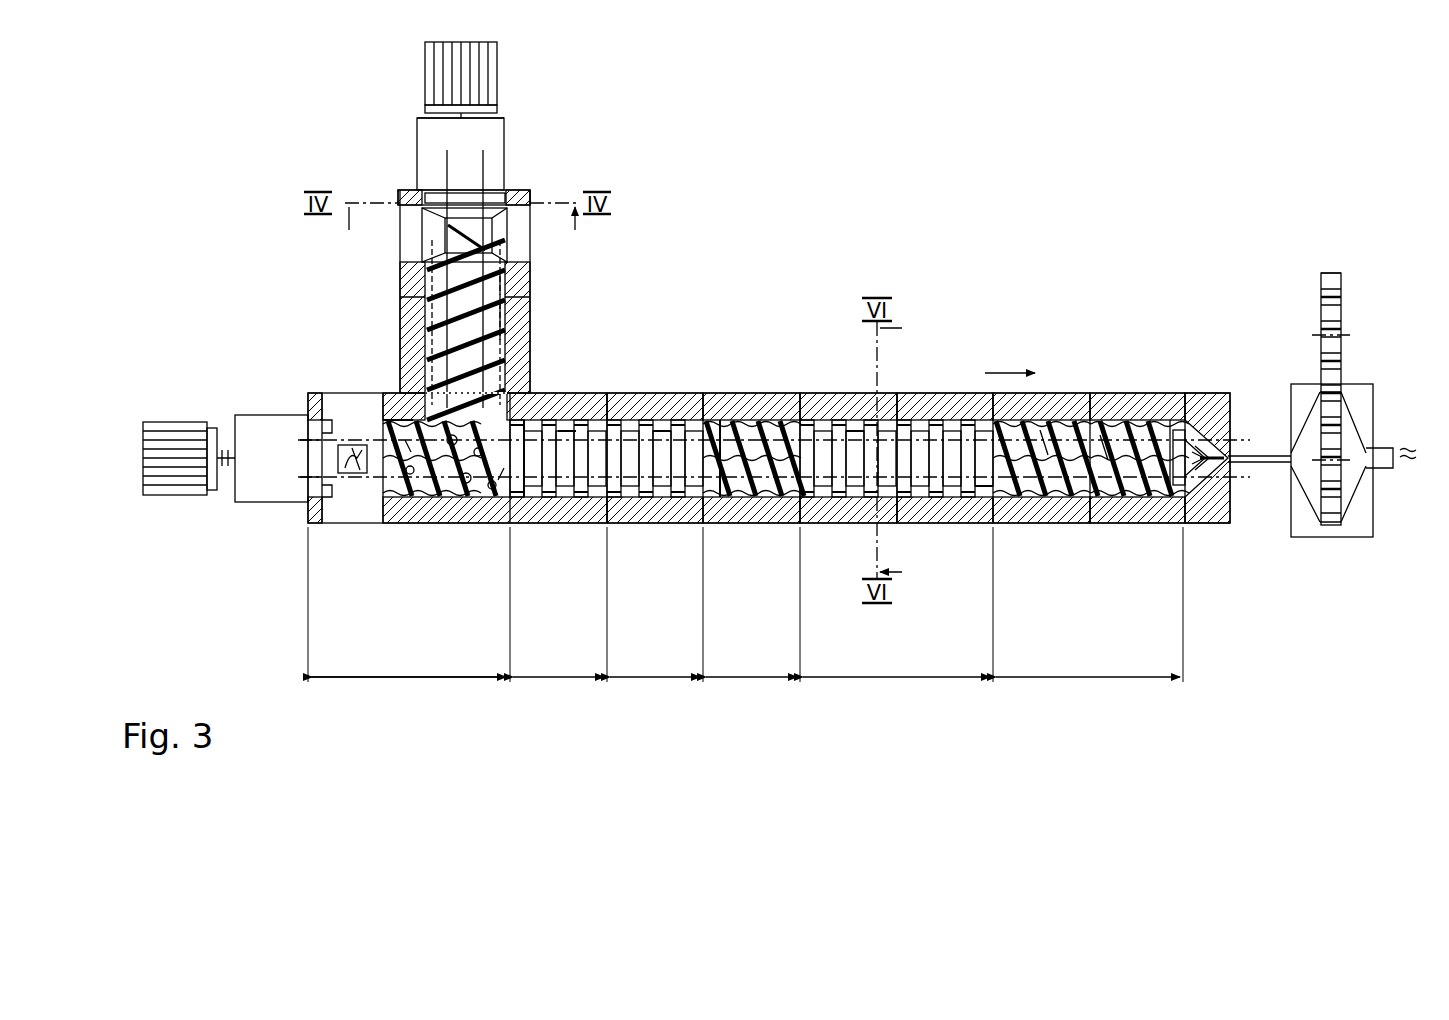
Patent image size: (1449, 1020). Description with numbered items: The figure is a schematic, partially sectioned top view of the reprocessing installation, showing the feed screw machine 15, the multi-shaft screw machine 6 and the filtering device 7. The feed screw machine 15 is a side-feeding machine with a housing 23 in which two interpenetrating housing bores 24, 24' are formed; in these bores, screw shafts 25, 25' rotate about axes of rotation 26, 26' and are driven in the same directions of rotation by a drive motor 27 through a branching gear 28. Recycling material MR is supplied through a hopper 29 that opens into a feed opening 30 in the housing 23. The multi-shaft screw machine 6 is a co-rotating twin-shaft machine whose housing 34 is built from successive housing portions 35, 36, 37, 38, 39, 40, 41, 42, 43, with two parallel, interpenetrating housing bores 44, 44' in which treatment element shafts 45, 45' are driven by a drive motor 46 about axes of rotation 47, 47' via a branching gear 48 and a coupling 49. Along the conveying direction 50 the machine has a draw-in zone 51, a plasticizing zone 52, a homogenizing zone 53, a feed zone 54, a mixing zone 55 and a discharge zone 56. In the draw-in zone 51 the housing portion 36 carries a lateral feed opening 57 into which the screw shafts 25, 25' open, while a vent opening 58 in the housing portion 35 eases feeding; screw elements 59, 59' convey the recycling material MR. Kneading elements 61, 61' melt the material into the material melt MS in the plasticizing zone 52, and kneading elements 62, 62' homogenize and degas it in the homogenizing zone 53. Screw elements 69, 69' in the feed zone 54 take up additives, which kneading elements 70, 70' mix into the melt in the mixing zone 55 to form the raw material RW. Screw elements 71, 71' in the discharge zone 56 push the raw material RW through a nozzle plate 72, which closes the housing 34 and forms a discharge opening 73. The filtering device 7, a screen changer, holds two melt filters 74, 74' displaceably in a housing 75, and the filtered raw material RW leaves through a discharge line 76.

The multi-shaft screw machine 6 is at (953, 383).
The filtering device 7 is at (1357, 383).
The feed screw machine 15 is at (388, 150).
The housing 23 is at (400, 192).
The housing bore 24 is at (405, 290).
The housing bore 24' is at (560, 317).
The screw shaft 25 is at (405, 296).
The screw shaft 25' is at (560, 280).
The axis of rotation 26 is at (376, 134).
The axis of rotation 26' is at (551, 162).
The drive motor 27 is at (495, 77).
The branching gear 28 is at (490, 143).
The hopper 29 is at (482, 232).
The feed opening 30 is at (497, 235).
The housing 34 is at (332, 387).
The housing portion 35 is at (395, 385).
The housing portion 36 is at (462, 508).
The housing portion 37 is at (585, 412).
The housing portion 38 is at (655, 410).
The housing portion 39 is at (770, 408).
The housing portion 40 is at (855, 405).
The housing portion 41 is at (900, 405).
The housing portion 42 is at (1080, 405).
The housing portion 43 is at (1125, 405).
The housing bore 44 is at (1091, 515).
The housing bore 44' is at (1056, 376).
The treatment element shaft 45 is at (1108, 522).
The treatment element shaft 45' is at (1183, 376).
The drive motor 46 is at (152, 422).
The axis of rotation 47 is at (295, 524).
The axis of rotation 47' is at (274, 514).
The branching gear 48 is at (272, 415).
The coupling 49 is at (222, 450).
The conveying direction 50 is at (1010, 373).
The draw-in zone 51 is at (409, 662).
The plasticizing zone 52 is at (558, 662).
The homogenizing zone 53 is at (655, 662).
The feed zone 54 is at (751, 662).
The mixing zone 55 is at (896, 662).
The discharge zone 56 is at (1088, 662).
The feed opening 57 is at (545, 390).
The vent opening 58 is at (347, 475).
The screw element 59 is at (490, 538).
The screw element 59' is at (391, 524).
The kneading element 61 is at (558, 514).
The kneading element 61' is at (605, 520).
The kneading element 62 is at (655, 514).
The kneading element 62' is at (699, 520).
The screw element 69 is at (753, 515).
The screw element 69' is at (775, 519).
The kneading element 70 is at (896, 514).
The kneading element 70' is at (895, 520).
The screw element 71 is at (1167, 514).
The screw element 71' is at (1205, 527).
The nozzle plate 72 is at (1210, 393).
The discharge opening 73 is at (1250, 455).
The melt filter 74 is at (1330, 441).
The melt filter 74' is at (1327, 243).
The housing 75 is at (1298, 522).
The discharge line 76 is at (1383, 458).
The material melt MS is at (688, 405).
The recycling material MR is at (545, 482).
The raw material RW is at (990, 470).